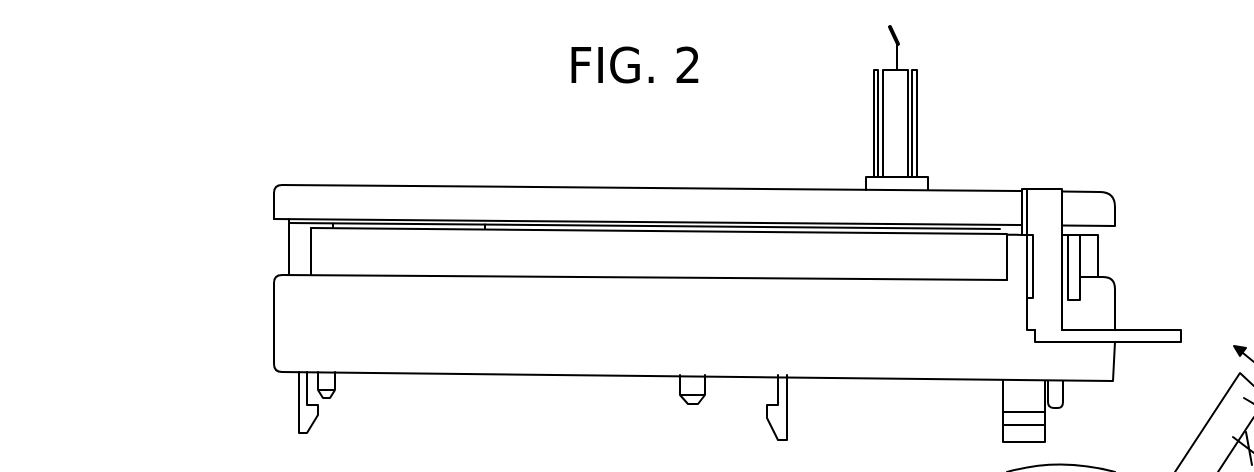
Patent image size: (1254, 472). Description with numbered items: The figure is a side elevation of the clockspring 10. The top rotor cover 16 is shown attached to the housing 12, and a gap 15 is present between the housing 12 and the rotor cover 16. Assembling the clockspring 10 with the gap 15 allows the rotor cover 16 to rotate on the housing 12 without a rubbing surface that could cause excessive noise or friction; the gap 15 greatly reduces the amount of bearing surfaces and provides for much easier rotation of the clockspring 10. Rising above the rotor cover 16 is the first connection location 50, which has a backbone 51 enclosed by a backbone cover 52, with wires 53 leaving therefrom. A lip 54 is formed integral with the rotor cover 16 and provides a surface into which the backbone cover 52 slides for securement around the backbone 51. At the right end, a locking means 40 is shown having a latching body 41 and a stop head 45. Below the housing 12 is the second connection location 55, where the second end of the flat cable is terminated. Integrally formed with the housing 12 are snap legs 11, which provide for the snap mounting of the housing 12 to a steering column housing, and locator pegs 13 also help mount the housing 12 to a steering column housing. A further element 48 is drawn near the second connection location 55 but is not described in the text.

The clockspring 10 is at (265, 308).
The snap legs 11 is at (310, 415).
The housing 12 is at (516, 360).
The locator pegs 13 is at (688, 382).
The gap 15 is at (505, 229).
The rotor cover 16 is at (1098, 207).
The locking means 40 is at (1150, 327).
The latching body 41 is at (1052, 290).
The stop head 45 is at (1043, 187).
The circular member 48 is at (999, 452).
The first connection location 50 is at (860, 175).
The backbone 51 is at (895, 135).
The backbone cover 52 is at (918, 100).
The wires 53 is at (902, 43).
The lip 54 is at (923, 187).
The second connection location 55 is at (993, 418).